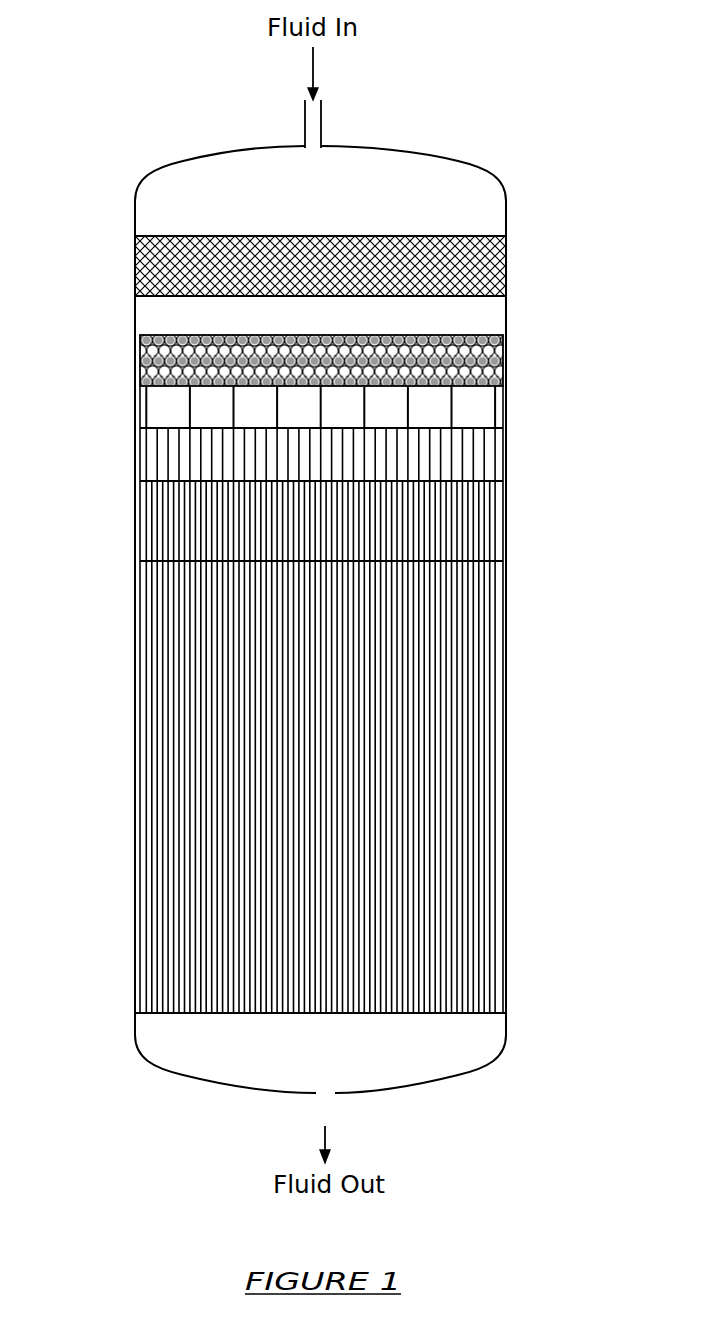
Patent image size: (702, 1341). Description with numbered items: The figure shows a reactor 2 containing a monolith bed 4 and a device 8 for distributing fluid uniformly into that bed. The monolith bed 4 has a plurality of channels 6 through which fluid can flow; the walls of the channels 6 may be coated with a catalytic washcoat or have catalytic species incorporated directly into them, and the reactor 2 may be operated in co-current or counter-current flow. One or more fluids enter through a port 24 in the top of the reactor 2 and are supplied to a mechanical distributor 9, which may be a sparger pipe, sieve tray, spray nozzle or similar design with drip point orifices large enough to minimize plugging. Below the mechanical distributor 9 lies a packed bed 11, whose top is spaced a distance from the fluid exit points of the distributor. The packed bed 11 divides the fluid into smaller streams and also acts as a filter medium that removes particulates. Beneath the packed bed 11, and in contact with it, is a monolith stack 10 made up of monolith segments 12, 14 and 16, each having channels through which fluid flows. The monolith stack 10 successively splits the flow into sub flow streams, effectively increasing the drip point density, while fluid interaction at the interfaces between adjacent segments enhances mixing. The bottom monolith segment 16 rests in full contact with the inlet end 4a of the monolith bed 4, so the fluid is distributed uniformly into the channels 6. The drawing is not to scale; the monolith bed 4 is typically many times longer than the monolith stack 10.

The reactor 2 is at (183, 153).
The port 24 is at (307, 130).
The device for distributing fluid 8 is at (445, 215).
The mechanical distributor 9 is at (500, 255).
The packed bed 11 is at (480, 352).
The monolith stack 10 is at (503, 378).
The monolith segment 12 is at (130, 410).
The monolith segment 14 is at (128, 450).
The monolith segment 16 is at (128, 523).
The inlet end 4a is at (463, 553).
The monolith bed 4 is at (138, 875).
The channels 6 is at (473, 947).